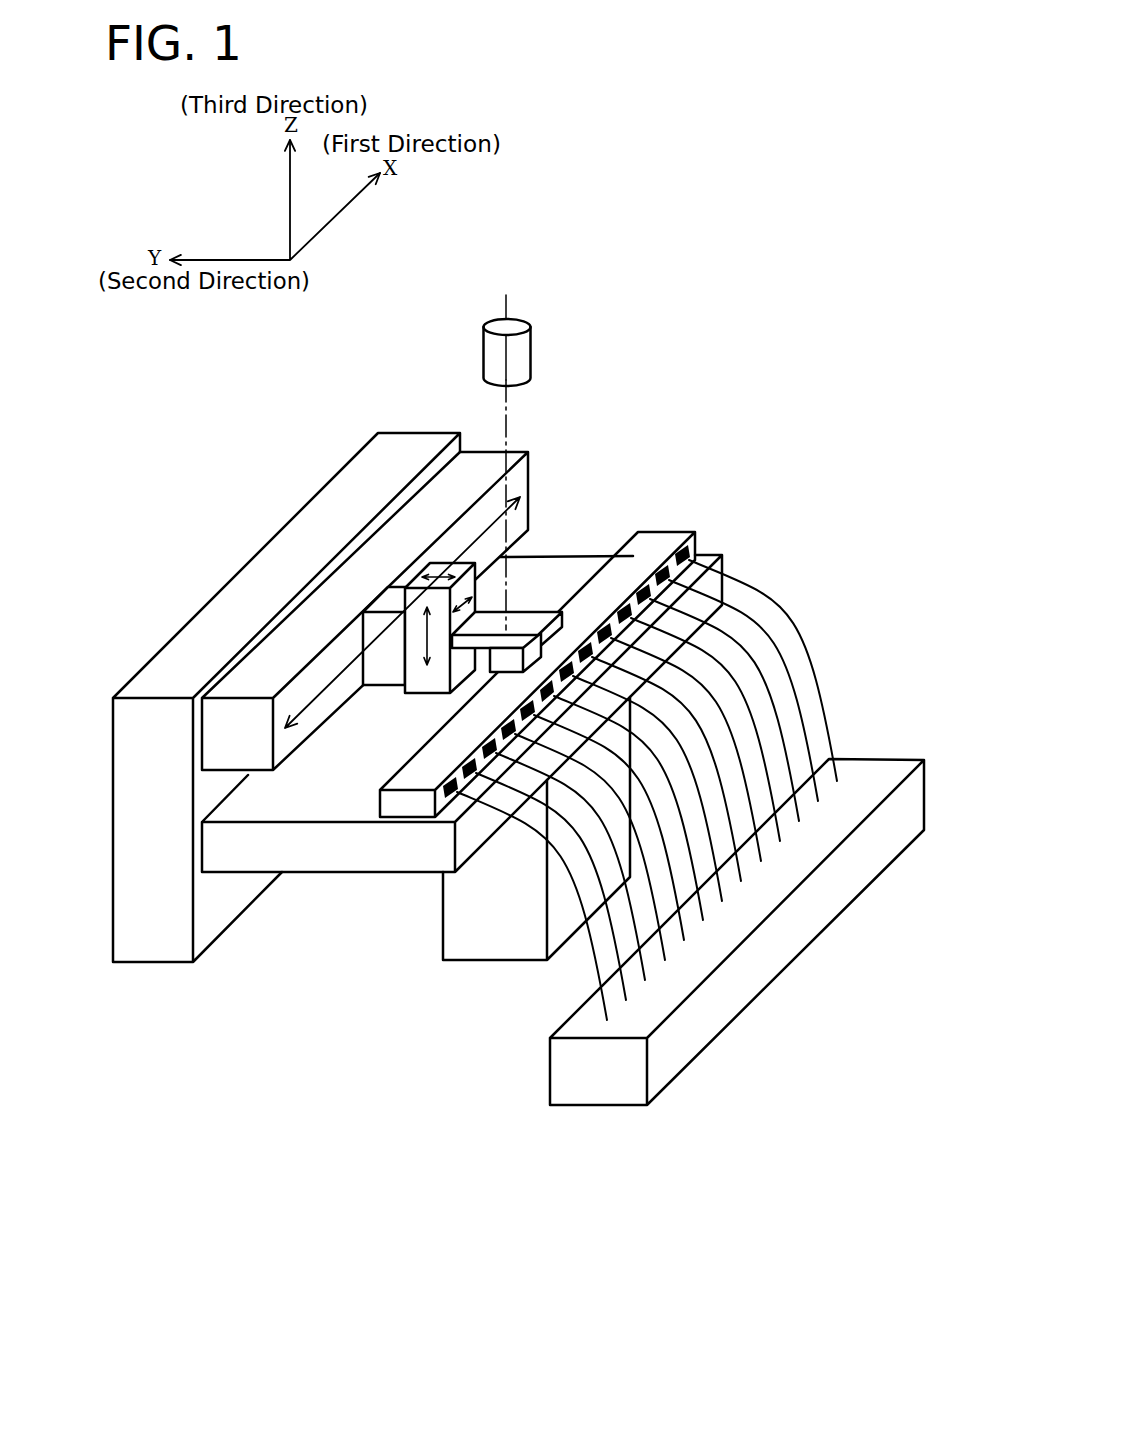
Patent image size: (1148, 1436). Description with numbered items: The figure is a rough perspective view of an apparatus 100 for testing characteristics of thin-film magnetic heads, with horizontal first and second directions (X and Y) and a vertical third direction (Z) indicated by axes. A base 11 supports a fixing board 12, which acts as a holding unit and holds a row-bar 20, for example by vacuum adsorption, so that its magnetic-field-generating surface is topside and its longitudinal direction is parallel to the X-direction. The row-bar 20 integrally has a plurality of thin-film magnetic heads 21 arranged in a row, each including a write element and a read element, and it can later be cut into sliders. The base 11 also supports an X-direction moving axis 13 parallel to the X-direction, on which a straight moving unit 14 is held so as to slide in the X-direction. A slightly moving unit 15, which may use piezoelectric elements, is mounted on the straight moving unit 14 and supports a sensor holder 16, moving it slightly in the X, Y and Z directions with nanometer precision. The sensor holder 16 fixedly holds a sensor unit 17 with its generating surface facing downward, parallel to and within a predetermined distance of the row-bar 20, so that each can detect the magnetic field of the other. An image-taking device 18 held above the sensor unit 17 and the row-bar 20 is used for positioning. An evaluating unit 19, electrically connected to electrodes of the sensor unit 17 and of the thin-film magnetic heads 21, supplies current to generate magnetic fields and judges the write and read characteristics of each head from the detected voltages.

The base 11 is at (145, 943).
The fixing board 12 is at (325, 858).
The X-direction moving axis 13 is at (477, 462).
The straight moving unit 14 is at (373, 630).
The slightly moving unit 15 is at (403, 587).
The sensor holder 16 is at (503, 630).
The sensor unit 17 is at (512, 665).
The image-taking device 18 is at (520, 353).
The evaluating unit 19 is at (718, 1017).
The row-bar 20 is at (663, 538).
The thin-film magnetic head 21 is at (686, 556).
The apparatus for testing characteristics of thin-film magnetic head 100 is at (148, 1236).